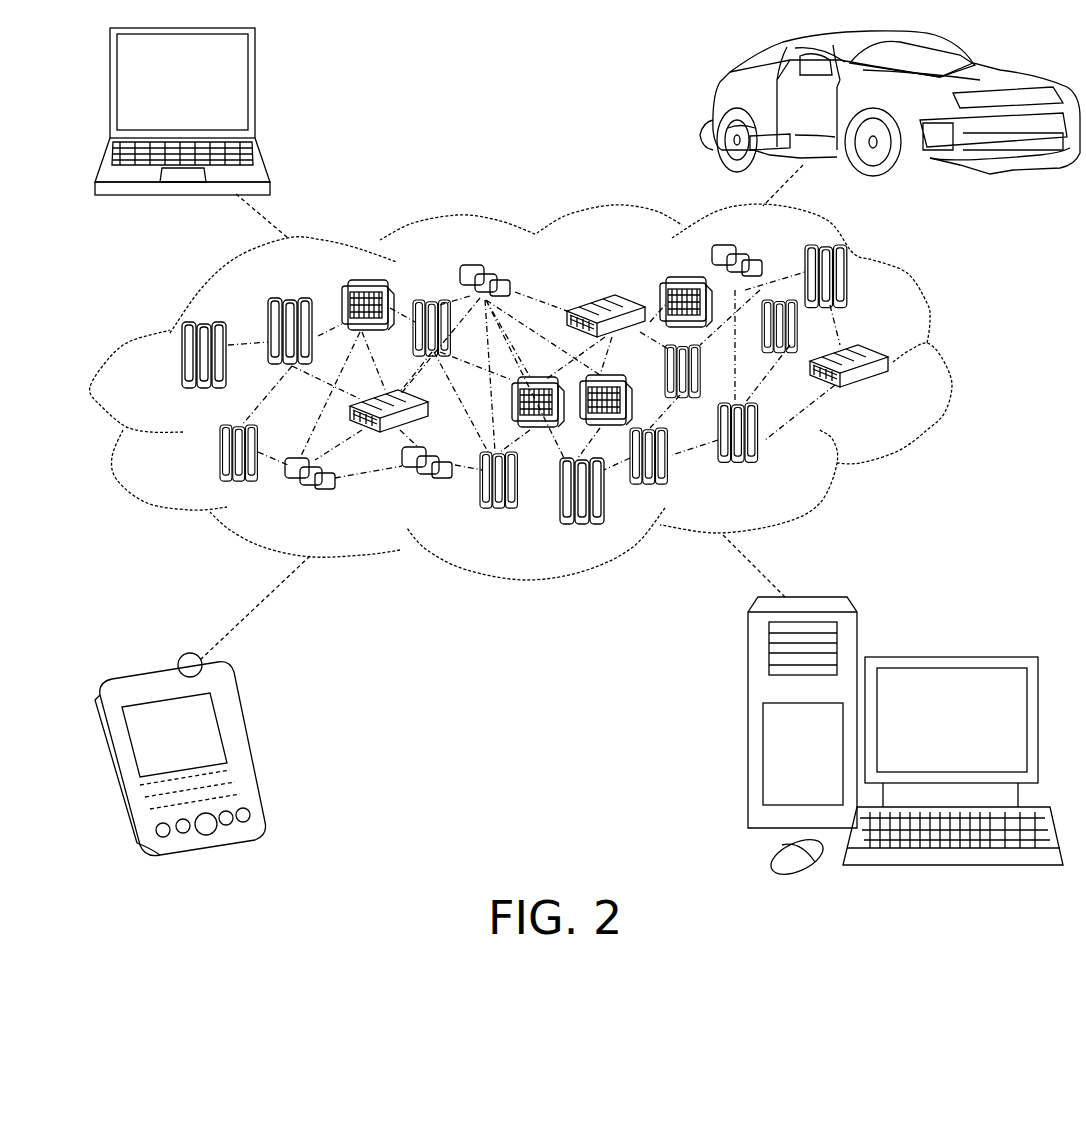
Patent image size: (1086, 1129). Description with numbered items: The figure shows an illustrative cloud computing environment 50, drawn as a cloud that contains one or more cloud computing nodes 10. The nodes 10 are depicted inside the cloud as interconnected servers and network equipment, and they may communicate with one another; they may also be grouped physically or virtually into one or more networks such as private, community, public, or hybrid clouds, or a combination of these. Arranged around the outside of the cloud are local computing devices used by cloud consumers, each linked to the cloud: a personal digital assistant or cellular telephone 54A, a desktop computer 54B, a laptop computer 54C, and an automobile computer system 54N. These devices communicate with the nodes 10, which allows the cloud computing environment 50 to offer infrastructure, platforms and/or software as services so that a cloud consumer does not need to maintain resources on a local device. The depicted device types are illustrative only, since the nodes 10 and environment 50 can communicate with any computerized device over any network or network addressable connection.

The cloud computing node 10 is at (890, 395).
The cloud computing environment 50 is at (950, 365).
The personal digital assistant or cellular telephone 54A is at (245, 750).
The desktop computer 54B is at (947, 657).
The laptop computer 54C is at (253, 90).
The automobile computer system 54N is at (718, 106).